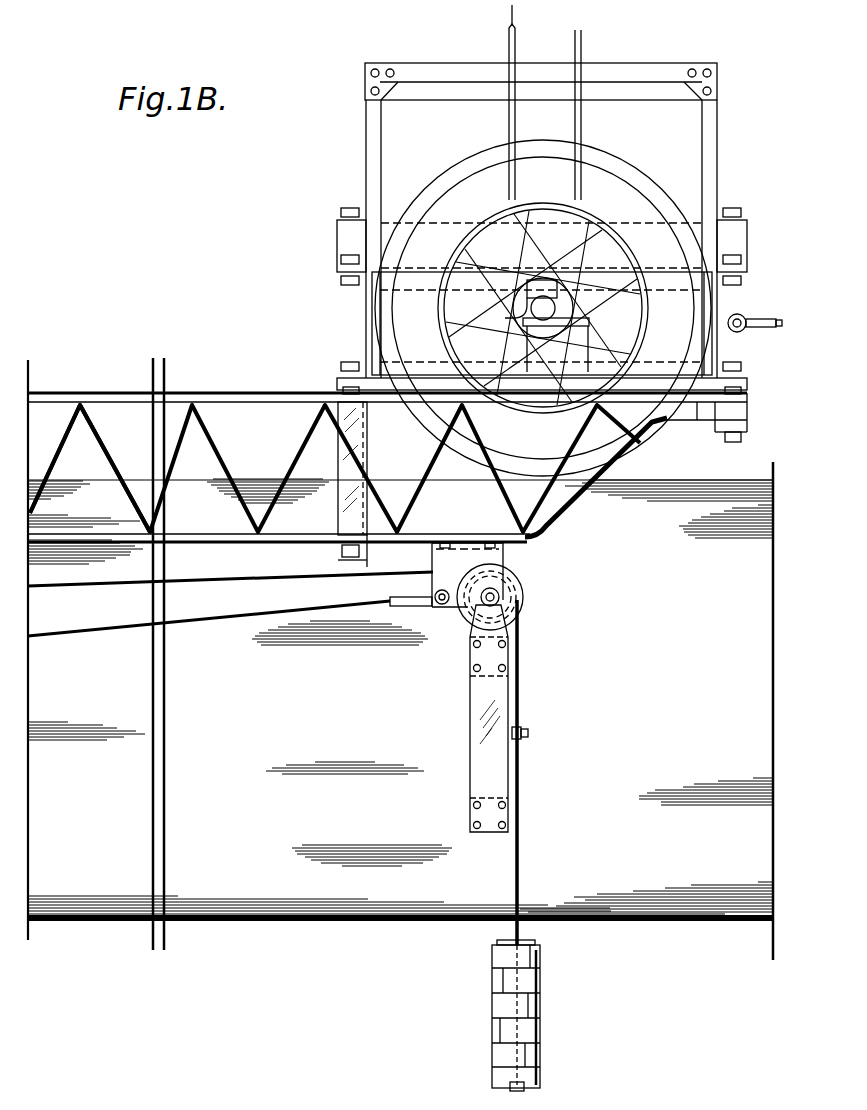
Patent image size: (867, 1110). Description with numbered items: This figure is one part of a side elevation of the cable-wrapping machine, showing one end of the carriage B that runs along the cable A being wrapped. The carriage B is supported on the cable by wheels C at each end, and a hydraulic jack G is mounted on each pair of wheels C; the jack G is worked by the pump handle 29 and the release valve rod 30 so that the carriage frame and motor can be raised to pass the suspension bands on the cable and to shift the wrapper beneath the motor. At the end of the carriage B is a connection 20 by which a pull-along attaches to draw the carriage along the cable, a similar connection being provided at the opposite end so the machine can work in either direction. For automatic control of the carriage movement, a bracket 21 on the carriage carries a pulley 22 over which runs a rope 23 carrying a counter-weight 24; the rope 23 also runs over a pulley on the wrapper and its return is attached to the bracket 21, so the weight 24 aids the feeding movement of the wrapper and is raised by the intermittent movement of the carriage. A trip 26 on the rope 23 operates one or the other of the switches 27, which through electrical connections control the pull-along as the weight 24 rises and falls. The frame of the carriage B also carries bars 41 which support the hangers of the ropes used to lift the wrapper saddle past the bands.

The connection 20 is at (748, 325).
The bracket 21 is at (487, 557).
The pulley 22 is at (523, 592).
The rope 23 is at (518, 638).
The counter-weight 24 is at (533, 1008).
The trip 26 is at (528, 732).
The switch 27 is at (488, 655).
The pump handle 29 is at (509, 47).
The release valve rod 30 is at (582, 50).
The bar 41 is at (107, 440).
The cable A is at (322, 883).
The carriage B is at (242, 397).
The wheel C is at (483, 167).
The hydraulic jack G is at (563, 340).